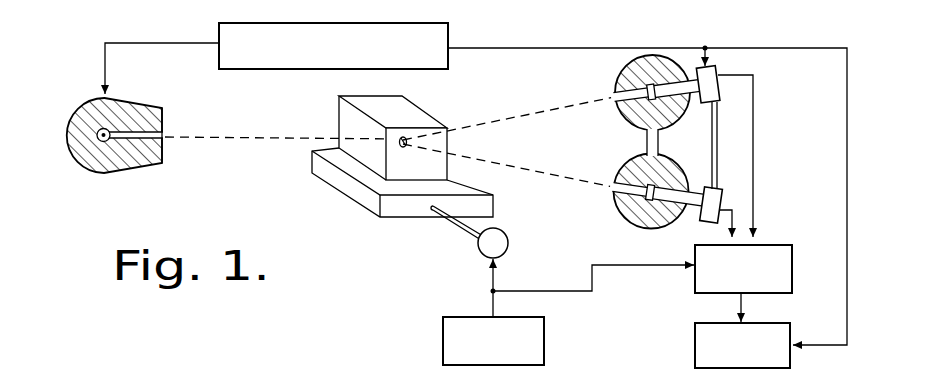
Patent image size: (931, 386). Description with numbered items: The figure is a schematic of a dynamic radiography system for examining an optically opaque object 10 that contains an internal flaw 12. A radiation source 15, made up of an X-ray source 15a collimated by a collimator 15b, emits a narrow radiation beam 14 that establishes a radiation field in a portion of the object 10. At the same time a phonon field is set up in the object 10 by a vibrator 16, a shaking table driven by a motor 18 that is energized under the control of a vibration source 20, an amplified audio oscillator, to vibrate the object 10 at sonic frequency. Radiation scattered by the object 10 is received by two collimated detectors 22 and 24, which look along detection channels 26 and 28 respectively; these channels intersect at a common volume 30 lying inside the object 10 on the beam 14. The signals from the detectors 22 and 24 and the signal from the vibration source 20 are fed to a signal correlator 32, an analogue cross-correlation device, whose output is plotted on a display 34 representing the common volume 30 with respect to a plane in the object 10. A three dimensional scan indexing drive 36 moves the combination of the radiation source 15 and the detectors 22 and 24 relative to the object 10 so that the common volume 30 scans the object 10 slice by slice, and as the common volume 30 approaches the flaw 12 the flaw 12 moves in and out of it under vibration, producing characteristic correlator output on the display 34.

The object 10 is at (347, 112).
The internal flaw 12 is at (406, 140).
The radiation beam 14 is at (206, 137).
The radiation source 15 is at (62, 164).
The X-ray source 15a is at (104, 143).
The collimator 15b is at (128, 164).
The vibrator 16 is at (353, 189).
The motor 18 is at (507, 238).
The vibration source 20 is at (544, 355).
The first detector 22 is at (628, 72).
The second detector 24 is at (617, 208).
The first detection channel 26 is at (547, 112).
The second detection channel 28 is at (515, 168).
The common volume 30 is at (399, 148).
The signal correlator 32 is at (793, 268).
The display 34 is at (787, 363).
The three dimensional scan indexing drive 36 is at (448, 30).